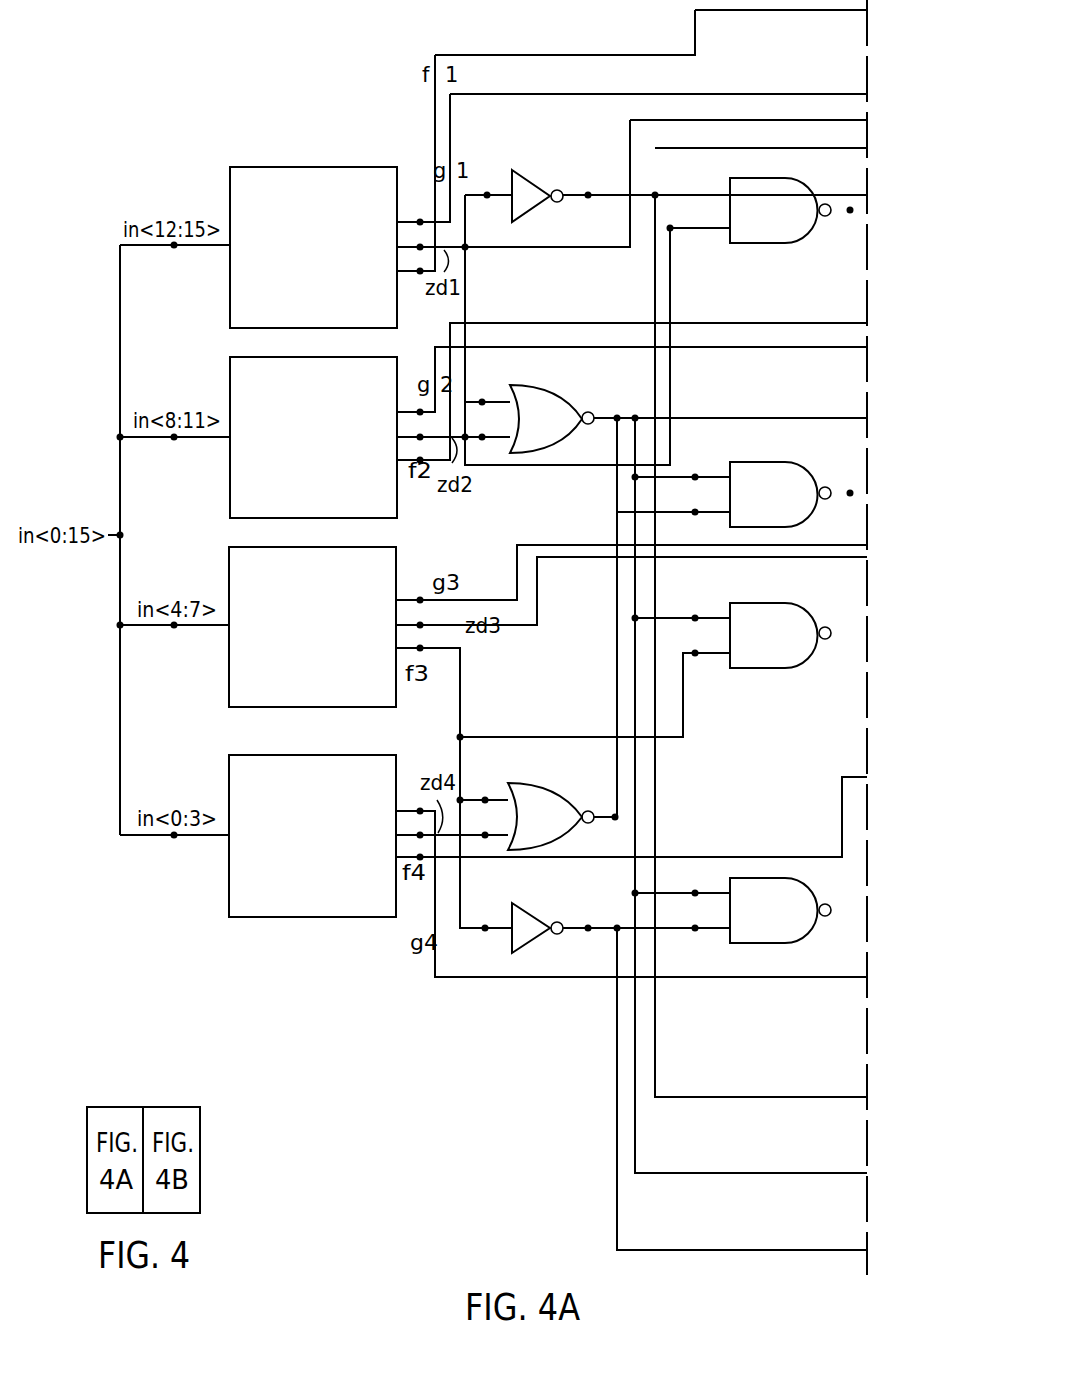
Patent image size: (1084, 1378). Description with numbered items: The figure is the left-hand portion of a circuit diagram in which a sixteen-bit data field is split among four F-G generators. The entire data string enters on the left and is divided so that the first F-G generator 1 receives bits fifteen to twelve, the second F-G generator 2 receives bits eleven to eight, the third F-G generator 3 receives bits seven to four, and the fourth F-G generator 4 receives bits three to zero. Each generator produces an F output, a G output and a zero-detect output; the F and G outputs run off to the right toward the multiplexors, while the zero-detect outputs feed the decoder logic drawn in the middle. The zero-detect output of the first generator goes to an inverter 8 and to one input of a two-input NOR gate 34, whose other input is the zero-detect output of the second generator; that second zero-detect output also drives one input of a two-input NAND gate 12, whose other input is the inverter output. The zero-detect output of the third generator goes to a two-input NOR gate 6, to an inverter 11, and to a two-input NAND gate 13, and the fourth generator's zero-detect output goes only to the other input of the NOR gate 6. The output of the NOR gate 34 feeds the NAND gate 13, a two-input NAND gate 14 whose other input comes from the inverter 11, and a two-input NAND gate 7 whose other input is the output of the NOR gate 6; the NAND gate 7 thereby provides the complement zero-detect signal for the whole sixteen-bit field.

The first F-G generator 1 is at (324, 242).
The second F-G generator 2 is at (324, 432).
The third F-G generator 3 is at (323, 625).
The fourth F-G generator 4 is at (323, 835).
The inverter 8 is at (553, 183).
The two-input NAND gate 12 is at (786, 207).
The two-input NOR gate 34 is at (567, 416).
The two-input NAND gate 7 is at (785, 494).
The two-input NAND gate 13 is at (787, 631).
The two-input NOR gate 6 is at (560, 817).
The inverter 11 is at (550, 916).
The two-input NAND gate 14 is at (787, 906).